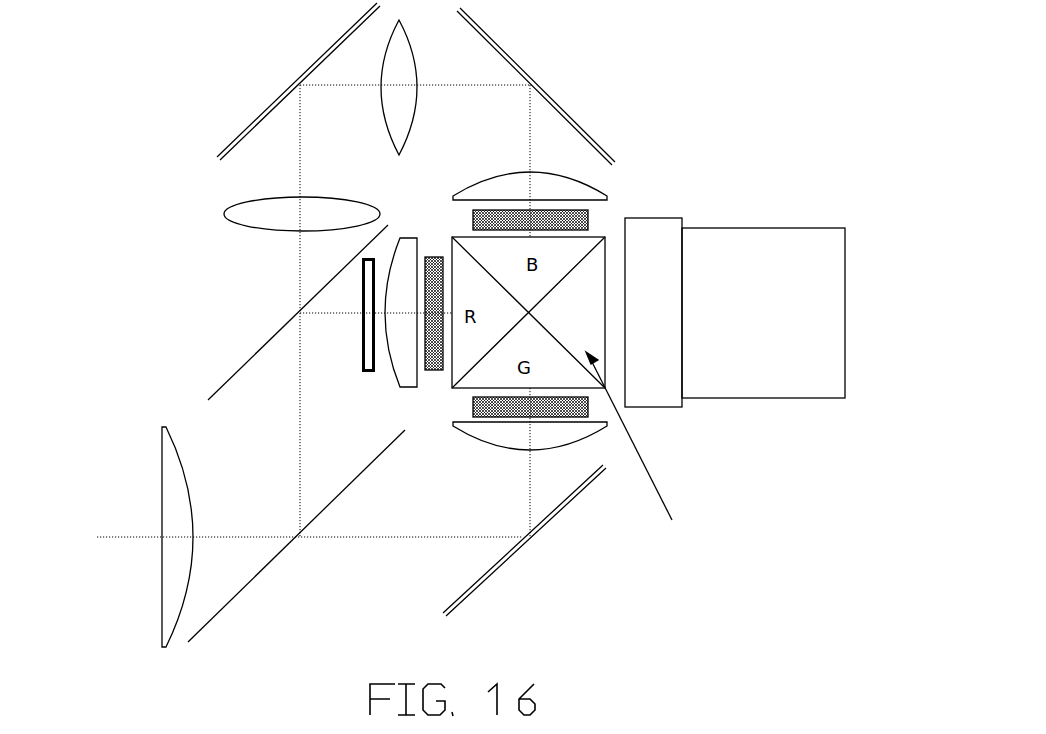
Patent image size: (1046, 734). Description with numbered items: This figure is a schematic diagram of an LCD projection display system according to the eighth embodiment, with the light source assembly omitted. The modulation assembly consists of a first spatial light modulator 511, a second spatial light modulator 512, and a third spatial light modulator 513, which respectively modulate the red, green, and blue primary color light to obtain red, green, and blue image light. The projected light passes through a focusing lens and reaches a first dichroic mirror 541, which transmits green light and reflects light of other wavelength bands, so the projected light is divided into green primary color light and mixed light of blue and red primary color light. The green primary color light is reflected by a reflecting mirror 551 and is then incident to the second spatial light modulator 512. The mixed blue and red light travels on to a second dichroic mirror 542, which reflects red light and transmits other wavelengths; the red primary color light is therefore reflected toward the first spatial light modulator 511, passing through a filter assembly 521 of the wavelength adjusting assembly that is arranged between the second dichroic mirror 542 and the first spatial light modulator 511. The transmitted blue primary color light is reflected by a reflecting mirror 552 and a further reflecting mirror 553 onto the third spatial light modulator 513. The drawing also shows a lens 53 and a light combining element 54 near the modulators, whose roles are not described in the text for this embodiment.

The lens 53 is at (158, 582).
The light combining prism 54 is at (638, 452).
The first spatial light modulator 511 is at (430, 257).
The second spatial light modulator 512 is at (472, 410).
The third spatial light modulator 513 is at (588, 217).
The filter assembly 521 is at (373, 375).
The first dichroic mirror 541 is at (248, 582).
The second dichroic mirror 542 is at (278, 330).
The reflecting mirror 551 is at (502, 567).
The reflecting mirror 552 is at (313, 60).
The reflecting mirror 553 is at (520, 59).